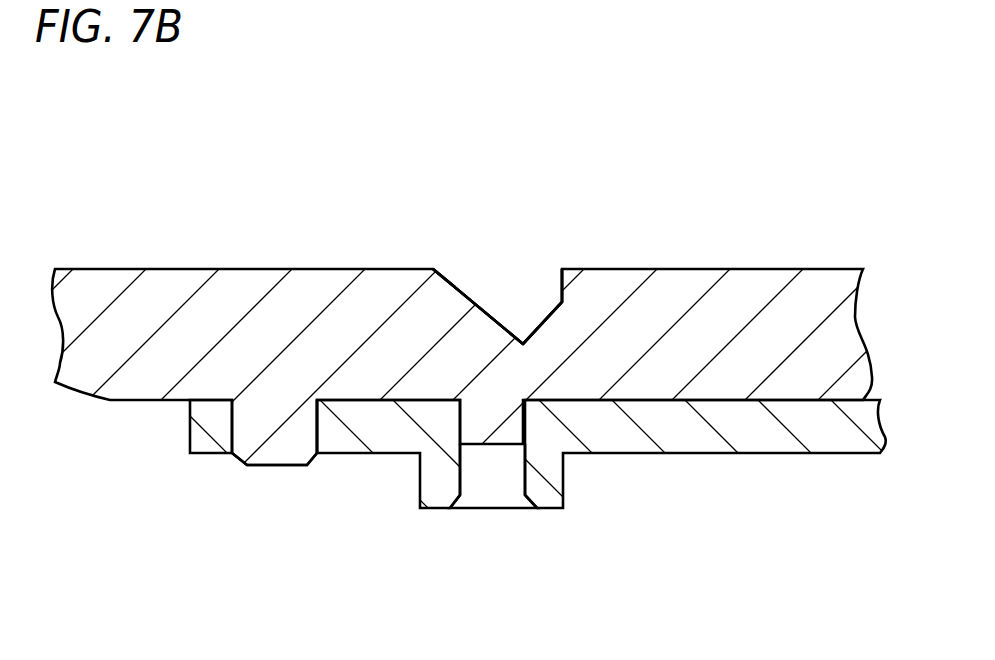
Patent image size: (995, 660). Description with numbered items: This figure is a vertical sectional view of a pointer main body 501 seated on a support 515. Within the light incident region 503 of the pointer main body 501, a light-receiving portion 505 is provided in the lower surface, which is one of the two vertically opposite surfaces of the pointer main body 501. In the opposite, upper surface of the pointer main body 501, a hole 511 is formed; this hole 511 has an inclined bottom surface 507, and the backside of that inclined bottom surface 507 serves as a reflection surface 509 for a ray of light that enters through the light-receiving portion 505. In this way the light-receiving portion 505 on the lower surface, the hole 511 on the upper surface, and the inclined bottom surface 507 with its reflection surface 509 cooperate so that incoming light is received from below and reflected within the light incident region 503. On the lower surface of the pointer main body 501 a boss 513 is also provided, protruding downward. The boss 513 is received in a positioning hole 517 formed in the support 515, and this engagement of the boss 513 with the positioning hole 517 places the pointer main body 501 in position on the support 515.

The pointer main body 501 is at (137, 240).
The light incident region 503 is at (515, 188).
The light-receiving portion 505 is at (490, 444).
The inclined bottom surface 507 is at (475, 295).
The reflection surface 509 is at (452, 280).
The hole 511 is at (540, 285).
The boss 513 is at (262, 468).
The support 515 is at (700, 455).
The positioning hole 517 is at (317, 428).